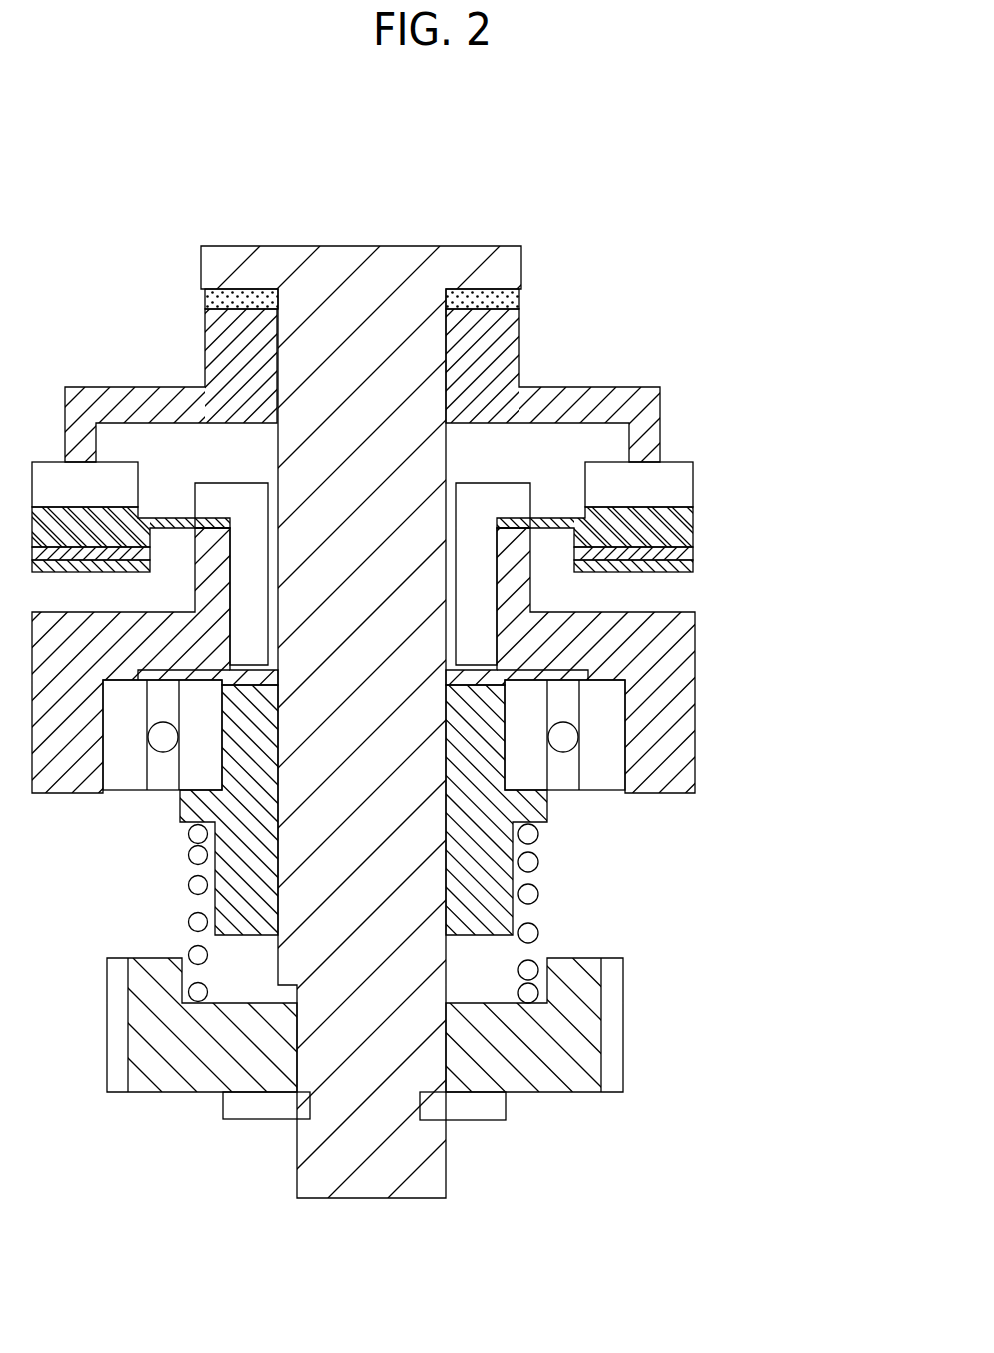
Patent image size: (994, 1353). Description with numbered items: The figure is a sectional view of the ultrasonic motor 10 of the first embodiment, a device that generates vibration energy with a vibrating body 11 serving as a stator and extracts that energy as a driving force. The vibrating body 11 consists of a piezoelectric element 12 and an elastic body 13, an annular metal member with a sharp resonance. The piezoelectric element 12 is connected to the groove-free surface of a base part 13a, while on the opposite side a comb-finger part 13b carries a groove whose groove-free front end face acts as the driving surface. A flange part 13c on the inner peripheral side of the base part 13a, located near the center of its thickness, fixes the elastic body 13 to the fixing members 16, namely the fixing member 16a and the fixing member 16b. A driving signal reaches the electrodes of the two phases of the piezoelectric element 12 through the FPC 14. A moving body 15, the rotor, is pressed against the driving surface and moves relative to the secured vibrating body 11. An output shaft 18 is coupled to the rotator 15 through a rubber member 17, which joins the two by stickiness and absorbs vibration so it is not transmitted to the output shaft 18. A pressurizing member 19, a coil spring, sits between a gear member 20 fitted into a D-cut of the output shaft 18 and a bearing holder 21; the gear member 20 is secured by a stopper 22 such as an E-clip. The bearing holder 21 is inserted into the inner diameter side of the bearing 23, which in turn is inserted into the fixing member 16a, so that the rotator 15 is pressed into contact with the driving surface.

The ultrasonic motor 10 is at (622, 148).
The vibrating body 11 is at (840, 458).
The piezoelectric element 12 is at (687, 553).
The elastic body 13 is at (788, 420).
The base part 13a is at (675, 527).
The comb-finger part 13b is at (675, 492).
The flange part 13c is at (547, 518).
The FPC 14 is at (687, 567).
The moving body 15 is at (595, 402).
The fixing members 16 is at (788, 640).
The fixing member 16a is at (648, 697).
The fixing member 16b is at (480, 645).
The rubber member 17 is at (513, 298).
The output shaft 18 is at (405, 252).
The pressurizing member 19 is at (527, 863).
The gear member 20 is at (572, 1030).
The bearing holder 21 is at (527, 808).
The stopper 22 is at (487, 1103).
The bearing 23 is at (610, 756).